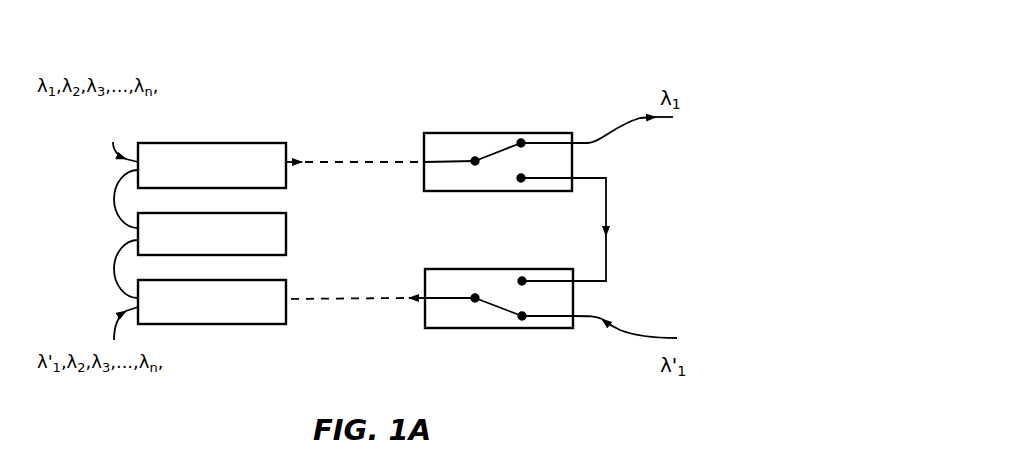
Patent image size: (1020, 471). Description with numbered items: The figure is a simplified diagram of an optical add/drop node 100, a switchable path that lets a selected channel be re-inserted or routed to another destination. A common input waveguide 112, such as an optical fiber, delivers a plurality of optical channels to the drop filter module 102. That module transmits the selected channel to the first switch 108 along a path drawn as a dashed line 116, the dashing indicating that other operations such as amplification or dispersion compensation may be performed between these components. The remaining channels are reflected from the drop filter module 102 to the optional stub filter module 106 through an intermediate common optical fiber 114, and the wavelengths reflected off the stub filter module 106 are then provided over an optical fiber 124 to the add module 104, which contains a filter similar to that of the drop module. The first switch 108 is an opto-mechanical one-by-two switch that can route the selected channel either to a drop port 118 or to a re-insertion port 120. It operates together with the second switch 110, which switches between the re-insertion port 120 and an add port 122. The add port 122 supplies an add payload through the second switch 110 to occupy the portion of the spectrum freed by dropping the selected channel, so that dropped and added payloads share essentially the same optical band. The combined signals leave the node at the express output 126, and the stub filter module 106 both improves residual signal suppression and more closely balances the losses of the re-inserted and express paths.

The optical add/drop node 100 is at (597, 92).
The drop filter module 102 is at (287, 152).
The add module 104 is at (287, 290).
The stub filter module 106 is at (287, 232).
The first switch 108 is at (455, 133).
The second switch 110 is at (457, 269).
The common input waveguide 112 is at (113, 142).
The intermediate common optical fiber 114 is at (115, 217).
The dashed line 116 is at (359, 163).
The drop port 118 is at (635, 123).
The re-insertion port 120 is at (608, 218).
The add port 122 is at (618, 321).
The optical fiber 124 is at (115, 286).
The express output 126 is at (110, 330).